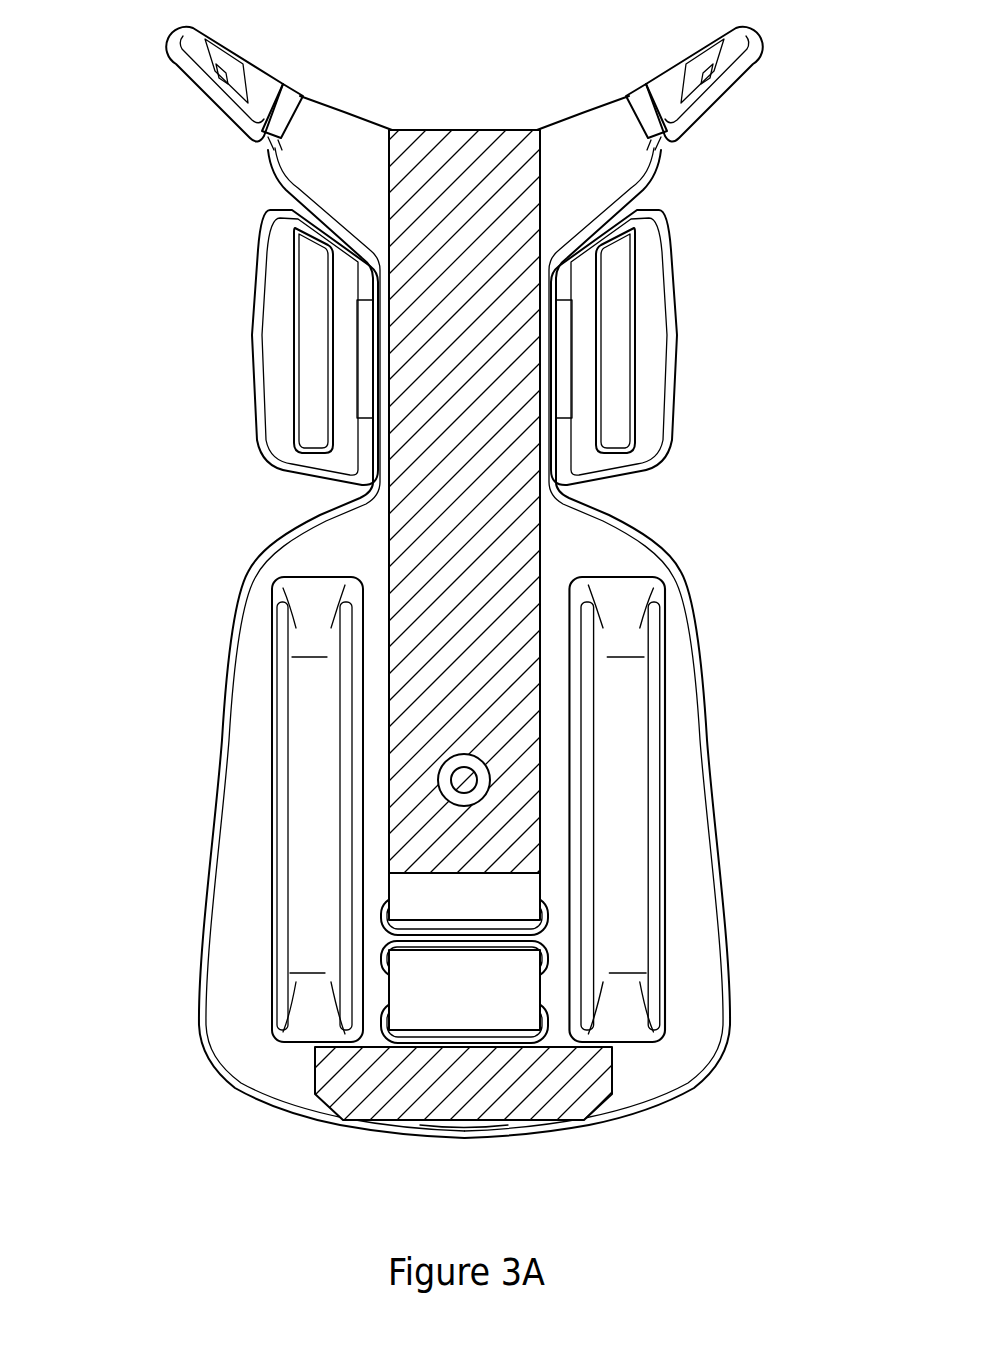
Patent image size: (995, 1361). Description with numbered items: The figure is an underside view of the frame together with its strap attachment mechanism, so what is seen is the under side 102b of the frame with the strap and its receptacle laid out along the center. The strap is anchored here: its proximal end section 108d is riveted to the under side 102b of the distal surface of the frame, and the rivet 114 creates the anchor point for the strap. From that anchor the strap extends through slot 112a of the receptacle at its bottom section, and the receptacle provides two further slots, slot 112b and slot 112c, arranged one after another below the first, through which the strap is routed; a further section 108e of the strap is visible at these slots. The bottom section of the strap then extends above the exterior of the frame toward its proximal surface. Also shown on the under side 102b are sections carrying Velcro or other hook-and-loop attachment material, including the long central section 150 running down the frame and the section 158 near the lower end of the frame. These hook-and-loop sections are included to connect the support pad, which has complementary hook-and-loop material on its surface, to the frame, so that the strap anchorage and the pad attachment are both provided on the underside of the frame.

The section 150 is at (396, 531).
The under side 102b is at (373, 650).
The rivet 114 is at (442, 772).
The slot 112a is at (385, 917).
The slot 112b is at (385, 949).
The slot 112c is at (383, 1030).
The proximal end section 108d is at (535, 890).
The section 108e is at (535, 990).
The section 158 is at (343, 1110).